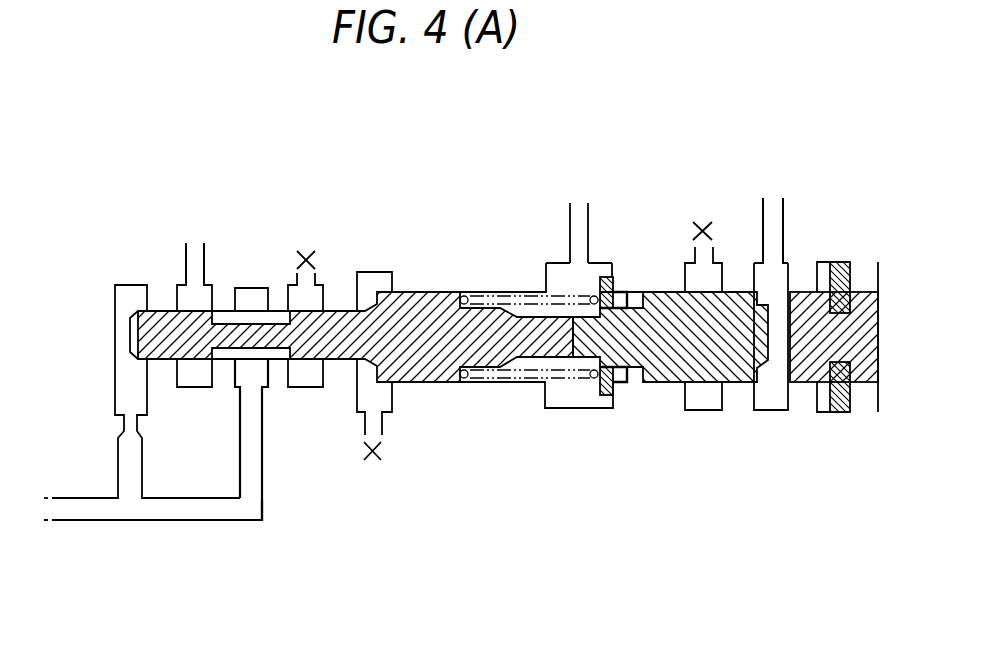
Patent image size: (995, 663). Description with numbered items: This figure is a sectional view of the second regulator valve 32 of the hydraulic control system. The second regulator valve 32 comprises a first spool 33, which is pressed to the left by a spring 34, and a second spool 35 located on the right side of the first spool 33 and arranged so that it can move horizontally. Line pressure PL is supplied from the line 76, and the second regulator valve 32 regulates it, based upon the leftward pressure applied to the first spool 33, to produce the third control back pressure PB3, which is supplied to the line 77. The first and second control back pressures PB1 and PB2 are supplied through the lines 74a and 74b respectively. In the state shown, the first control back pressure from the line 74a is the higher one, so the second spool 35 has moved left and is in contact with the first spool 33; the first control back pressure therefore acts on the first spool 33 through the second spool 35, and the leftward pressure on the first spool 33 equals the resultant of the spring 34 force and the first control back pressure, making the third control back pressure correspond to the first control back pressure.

The second regulator valve 32 is at (692, 172).
The first spool 33 is at (431, 383).
The spring 34 is at (588, 383).
The second spool 35 is at (672, 383).
The line 74a is at (785, 207).
The line 74b is at (570, 213).
The line 76 is at (186, 252).
The line 77 is at (173, 522).